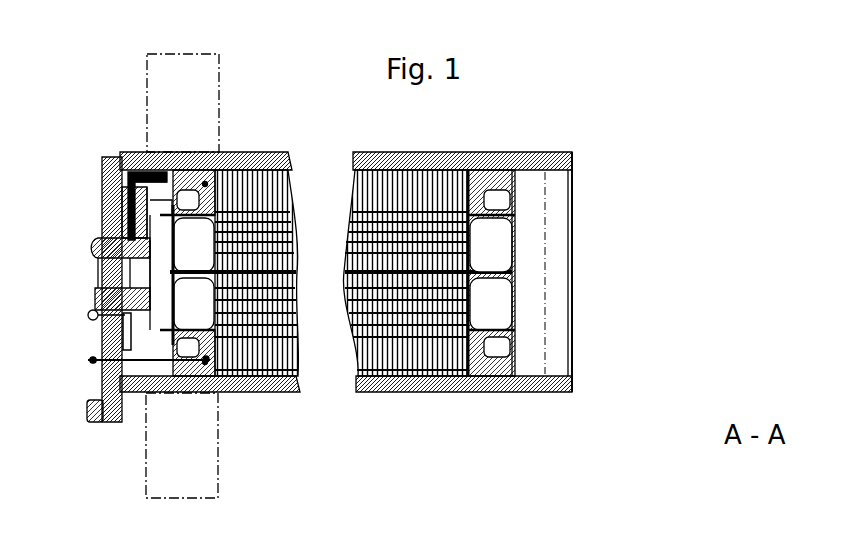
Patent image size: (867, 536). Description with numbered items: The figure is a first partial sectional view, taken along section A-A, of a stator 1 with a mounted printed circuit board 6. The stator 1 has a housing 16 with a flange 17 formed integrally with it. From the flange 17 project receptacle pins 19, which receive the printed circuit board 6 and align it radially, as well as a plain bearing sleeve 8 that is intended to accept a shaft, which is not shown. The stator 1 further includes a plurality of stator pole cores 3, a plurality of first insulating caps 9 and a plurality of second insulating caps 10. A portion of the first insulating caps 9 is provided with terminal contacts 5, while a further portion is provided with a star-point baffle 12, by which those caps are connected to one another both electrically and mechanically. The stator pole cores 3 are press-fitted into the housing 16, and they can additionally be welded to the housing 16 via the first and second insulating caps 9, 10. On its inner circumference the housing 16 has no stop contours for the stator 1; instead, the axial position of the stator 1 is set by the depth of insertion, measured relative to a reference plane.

The stator 1 is at (692, 120).
The stator pole cores 3 is at (375, 390).
The terminal contacts 5 is at (88, 358).
The printed circuit board 6 is at (100, 203).
The plain bearing sleeve 8 is at (95, 242).
The first insulating caps 9 is at (192, 168).
The second insulating caps 10 is at (493, 390).
The star-point baffle 12 is at (163, 178).
The housing 16 is at (417, 390).
The flange 17 is at (200, 432).
The receptacle pins 19 is at (87, 410).